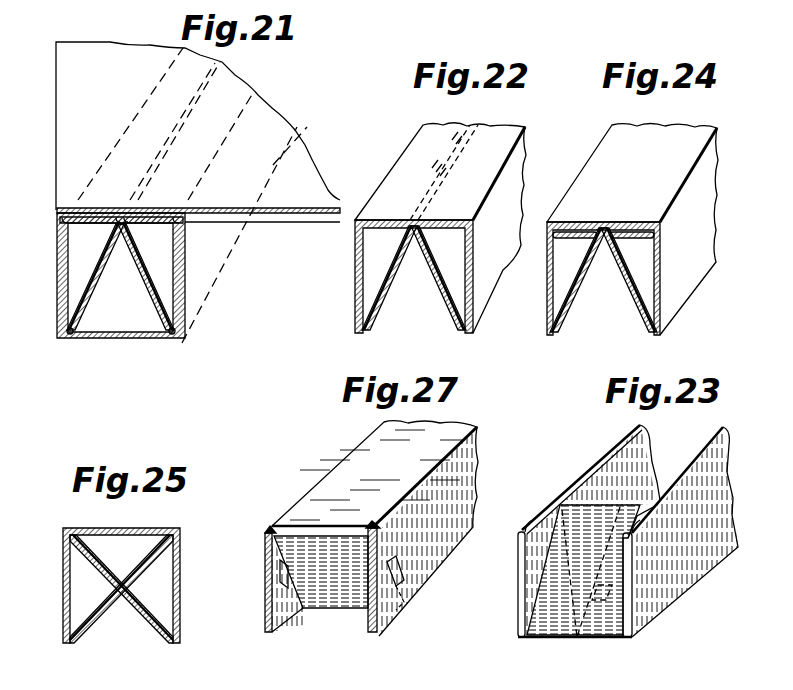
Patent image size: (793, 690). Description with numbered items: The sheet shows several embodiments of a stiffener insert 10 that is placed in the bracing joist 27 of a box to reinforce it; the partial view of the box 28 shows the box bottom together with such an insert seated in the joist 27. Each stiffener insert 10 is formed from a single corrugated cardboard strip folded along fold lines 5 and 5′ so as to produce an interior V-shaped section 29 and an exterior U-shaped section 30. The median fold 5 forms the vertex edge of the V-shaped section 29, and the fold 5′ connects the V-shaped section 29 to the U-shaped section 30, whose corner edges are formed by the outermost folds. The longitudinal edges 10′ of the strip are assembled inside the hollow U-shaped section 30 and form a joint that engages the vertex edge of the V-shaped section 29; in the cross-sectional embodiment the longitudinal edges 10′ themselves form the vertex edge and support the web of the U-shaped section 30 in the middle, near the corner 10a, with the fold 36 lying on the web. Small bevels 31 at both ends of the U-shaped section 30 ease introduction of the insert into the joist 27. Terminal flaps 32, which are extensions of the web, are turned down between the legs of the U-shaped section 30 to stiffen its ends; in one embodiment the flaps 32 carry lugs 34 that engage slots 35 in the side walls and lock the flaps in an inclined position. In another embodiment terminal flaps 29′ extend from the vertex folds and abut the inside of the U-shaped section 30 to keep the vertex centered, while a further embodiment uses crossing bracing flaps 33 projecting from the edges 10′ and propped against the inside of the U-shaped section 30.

In FIG. 21, the median fold 5 is at (120, 222).
In FIG. 24, the median fold 5 is at (602, 222).
In FIG. 21, the fold line 5′ is at (278, 167).
In FIG. 22, the fold line 5′ is at (358, 334).
In FIG. 24, the fold line 5′ is at (552, 340).
In FIG. 25, the fold line 5′ is at (66, 645).
In FIG. 27, the fold line 5′ is at (426, 478).
In FIG. 21, the stiffener insert 10 is at (85, 282).
In FIG. 22, the stiffener insert 10 is at (455, 158).
In FIG. 24, the stiffener insert 10 is at (651, 171).
In FIG. 25, the stiffener insert 10 is at (132, 528).
In FIG. 27, the stiffener insert 10 is at (377, 498).
In FIG. 23, the stiffener insert 10 is at (613, 445).
In FIG. 21, the longitudinal edge 10′ is at (192, 115).
In FIG. 22, the longitudinal edge 10′ is at (426, 200).
In FIG. 24, the longitudinal edge 10′ is at (560, 236).
In FIG. 22, the beam corner 10a is at (356, 225).
In FIG. 21, the joist 27 is at (236, 260).
In FIG. 21, the sheet blank 28 is at (266, 112).
In FIG. 21, the V-shaped section 29 is at (155, 291).
In FIG. 22, the V-shaped section 29 is at (448, 277).
In FIG. 24, the V-shaped section 29 is at (642, 292).
In FIG. 23, the V-shaped section 29 is at (566, 650).
In FIG. 24, the terminal flap 29′ is at (566, 244).
In FIG. 21, the U-shaped section 30 is at (60, 256).
In FIG. 22, the U-shaped section 30 is at (356, 270).
In FIG. 24, the U-shaped section 30 is at (548, 300).
In FIG. 23, the U-shaped section 30 is at (656, 583).
In FIG. 21, the bevel 31 is at (57, 212).
In FIG. 27, the bevel 31 is at (266, 531).
In FIG. 23, the bevel 31 is at (518, 536).
In FIG. 27, the terminal flap 32 is at (338, 585).
In FIG. 23, the terminal flap 32 is at (590, 538).
In FIG. 25, the bracing flap 33 is at (134, 606).
In FIG. 27, the lug 34 is at (282, 580).
In FIG. 27, the slot 35 is at (286, 590).
In FIG. 22, the fold line 36 is at (418, 205).